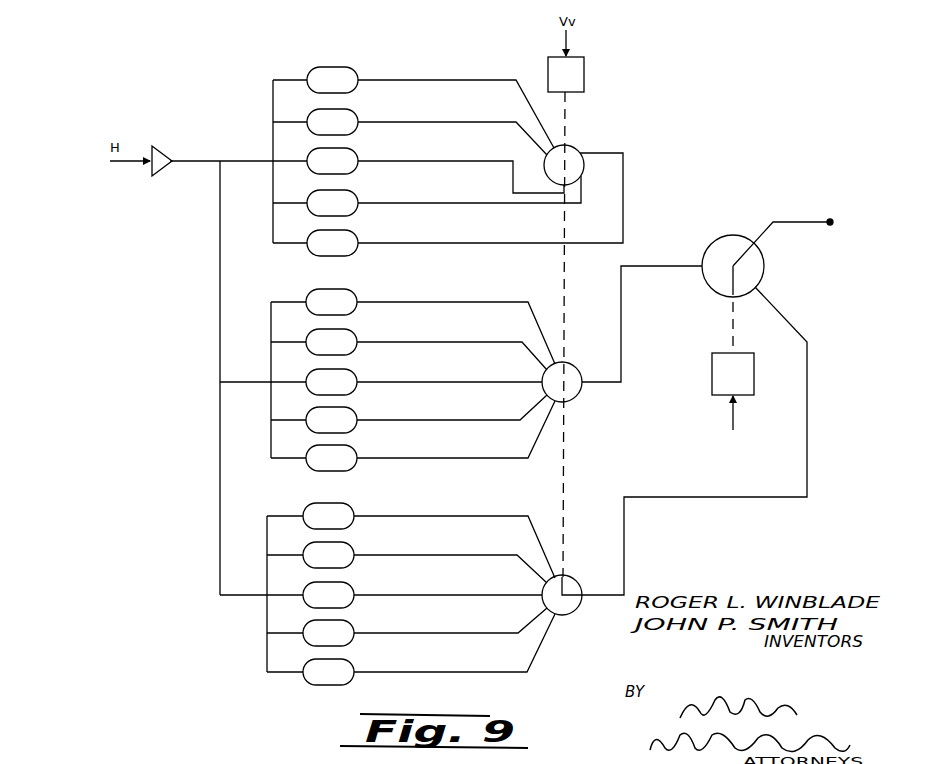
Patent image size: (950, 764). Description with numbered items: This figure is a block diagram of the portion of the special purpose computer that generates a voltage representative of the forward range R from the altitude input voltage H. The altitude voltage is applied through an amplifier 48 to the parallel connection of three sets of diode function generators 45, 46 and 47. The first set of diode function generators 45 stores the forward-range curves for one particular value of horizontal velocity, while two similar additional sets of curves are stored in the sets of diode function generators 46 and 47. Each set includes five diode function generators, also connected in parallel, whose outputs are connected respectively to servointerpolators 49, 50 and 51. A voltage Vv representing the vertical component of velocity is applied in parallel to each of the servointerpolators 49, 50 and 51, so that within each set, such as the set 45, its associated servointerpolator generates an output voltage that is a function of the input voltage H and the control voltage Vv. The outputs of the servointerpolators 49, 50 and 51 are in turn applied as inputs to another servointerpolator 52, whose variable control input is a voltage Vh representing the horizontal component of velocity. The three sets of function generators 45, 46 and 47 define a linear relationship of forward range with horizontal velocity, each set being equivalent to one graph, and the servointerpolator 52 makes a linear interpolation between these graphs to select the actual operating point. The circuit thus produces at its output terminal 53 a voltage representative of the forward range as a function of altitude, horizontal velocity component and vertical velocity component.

The first set of diode function generators 45 is at (262, 118).
The second set of diode function generators 46 is at (213, 321).
The third set of diode function generators 47 is at (211, 578).
The amplifier 48 is at (158, 177).
The servointerpolator 49 is at (586, 144).
The servointerpolator 50 is at (569, 368).
The servointerpolator 51 is at (569, 572).
The servointerpolator 52 is at (718, 240).
The output terminal 53 is at (830, 219).